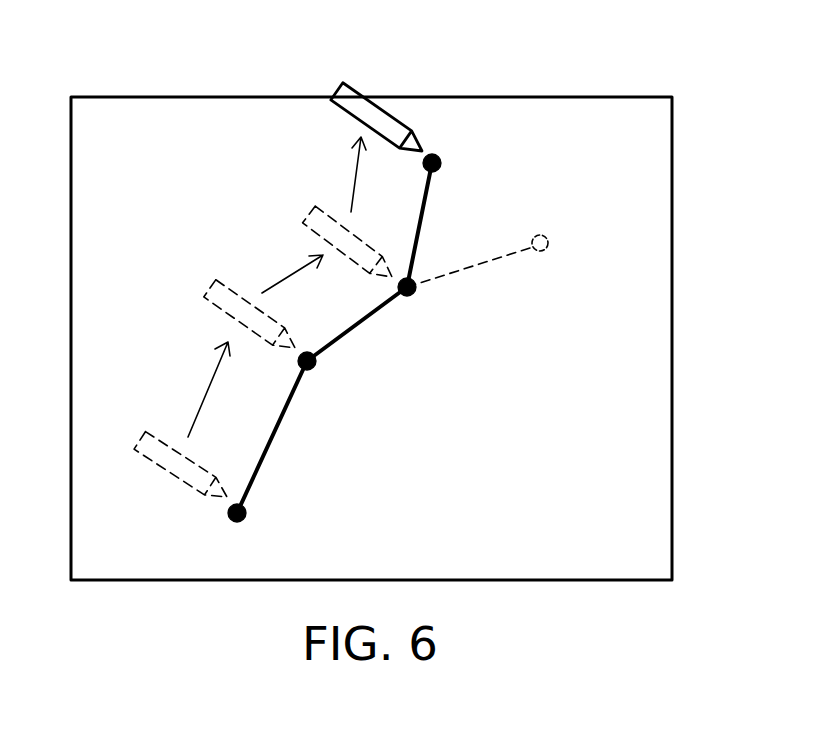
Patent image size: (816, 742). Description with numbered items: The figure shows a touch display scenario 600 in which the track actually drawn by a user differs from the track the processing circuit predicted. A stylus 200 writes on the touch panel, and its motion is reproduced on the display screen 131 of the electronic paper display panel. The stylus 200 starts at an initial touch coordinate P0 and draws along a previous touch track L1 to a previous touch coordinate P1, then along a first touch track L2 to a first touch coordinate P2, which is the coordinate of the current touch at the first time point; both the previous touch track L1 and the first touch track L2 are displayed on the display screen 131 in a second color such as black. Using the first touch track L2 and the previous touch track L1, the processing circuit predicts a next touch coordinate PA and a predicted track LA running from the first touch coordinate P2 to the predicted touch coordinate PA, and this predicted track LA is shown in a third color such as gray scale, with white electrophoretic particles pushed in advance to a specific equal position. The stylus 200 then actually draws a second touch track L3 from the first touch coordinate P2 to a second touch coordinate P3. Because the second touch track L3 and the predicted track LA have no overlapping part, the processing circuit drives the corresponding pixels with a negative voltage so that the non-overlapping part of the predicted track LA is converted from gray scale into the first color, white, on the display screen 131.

The display screen 131 is at (599, 98).
The stylus 200 is at (354, 106).
The touch display scenario 600 is at (732, 611).
The touch coordinate P0 is at (245, 520).
The previous touch coordinate P1 is at (315, 367).
The first touch coordinate P2 is at (410, 297).
The second touch coordinate P3 is at (441, 160).
The previous touch track L1 is at (275, 436).
The first touch track L2 is at (362, 323).
The second touch track L3 is at (423, 220).
The predicted track LA is at (470, 268).
The predicted touch coordinate PA is at (546, 250).